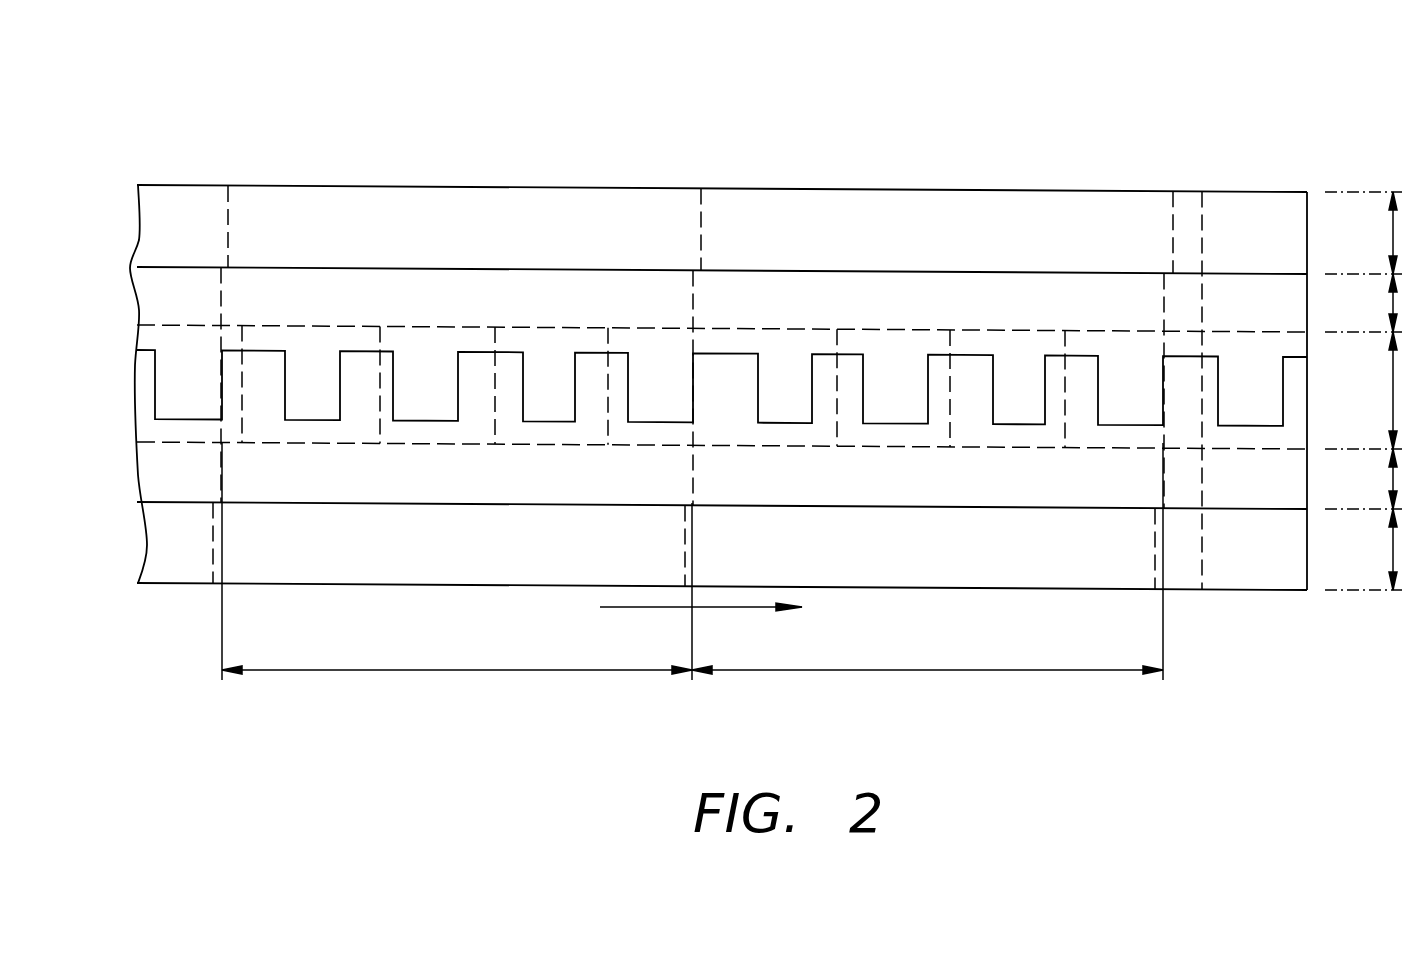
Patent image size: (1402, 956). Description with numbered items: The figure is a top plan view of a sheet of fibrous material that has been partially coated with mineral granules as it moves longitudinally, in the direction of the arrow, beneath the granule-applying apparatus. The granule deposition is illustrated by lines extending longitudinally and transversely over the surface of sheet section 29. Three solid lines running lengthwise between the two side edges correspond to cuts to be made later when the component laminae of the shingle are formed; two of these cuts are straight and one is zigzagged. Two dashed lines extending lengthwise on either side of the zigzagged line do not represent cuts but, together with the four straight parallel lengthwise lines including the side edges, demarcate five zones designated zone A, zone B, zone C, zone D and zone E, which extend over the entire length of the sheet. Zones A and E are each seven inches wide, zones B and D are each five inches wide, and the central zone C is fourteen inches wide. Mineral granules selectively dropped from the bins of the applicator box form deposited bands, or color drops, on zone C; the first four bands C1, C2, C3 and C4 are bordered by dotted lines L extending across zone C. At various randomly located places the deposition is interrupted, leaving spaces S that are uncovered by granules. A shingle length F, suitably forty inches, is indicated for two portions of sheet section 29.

The sheet section 29 is at (828, 190).
The first band of mineral granules C1 is at (1122, 360).
The second band of mineral granules C2 is at (893, 362).
The third band of mineral granules C3 is at (190, 363).
The fourth band of mineral granules C4 is at (411, 358).
The space S is at (311, 355).
The dotted line L is at (242, 444).
The shingle length F is at (692, 561).
The zone A is at (1363, 549).
The zone B is at (1363, 479).
The zone C is at (1363, 390).
The zone D is at (1363, 303).
The zone E is at (1363, 233).